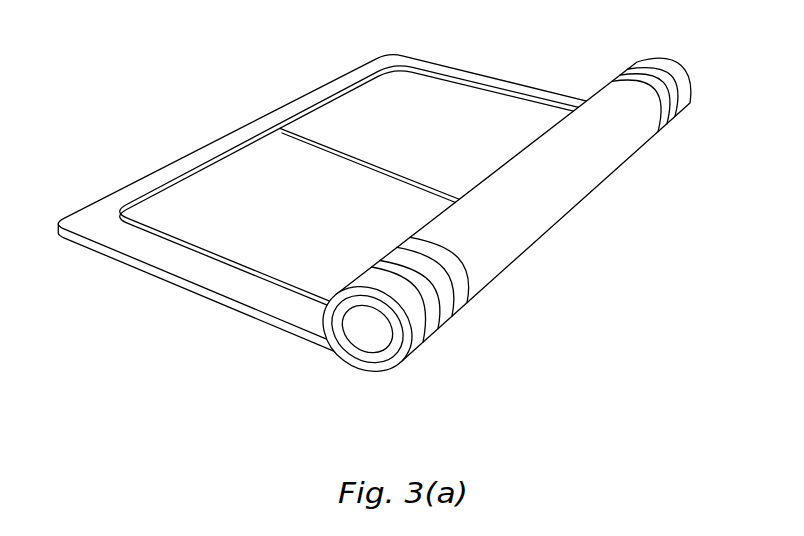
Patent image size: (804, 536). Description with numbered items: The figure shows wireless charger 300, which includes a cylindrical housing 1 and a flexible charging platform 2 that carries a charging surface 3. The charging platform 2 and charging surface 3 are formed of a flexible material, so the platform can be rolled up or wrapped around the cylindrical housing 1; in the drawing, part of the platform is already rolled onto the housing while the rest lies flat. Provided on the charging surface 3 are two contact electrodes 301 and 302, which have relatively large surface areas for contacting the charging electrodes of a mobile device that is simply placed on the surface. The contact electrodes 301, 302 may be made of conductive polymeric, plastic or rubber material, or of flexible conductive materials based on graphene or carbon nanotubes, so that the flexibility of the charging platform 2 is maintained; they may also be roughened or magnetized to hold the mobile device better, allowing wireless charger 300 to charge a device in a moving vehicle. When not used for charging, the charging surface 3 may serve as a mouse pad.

The wireless charger 300 is at (270, 50).
The cylindrical housing 1 is at (563, 217).
The flexible charging platform 2 is at (120, 262).
The charging surface 3 is at (471, 100).
The contact electrode 301 is at (440, 142).
The contact electrode 302 is at (308, 225).